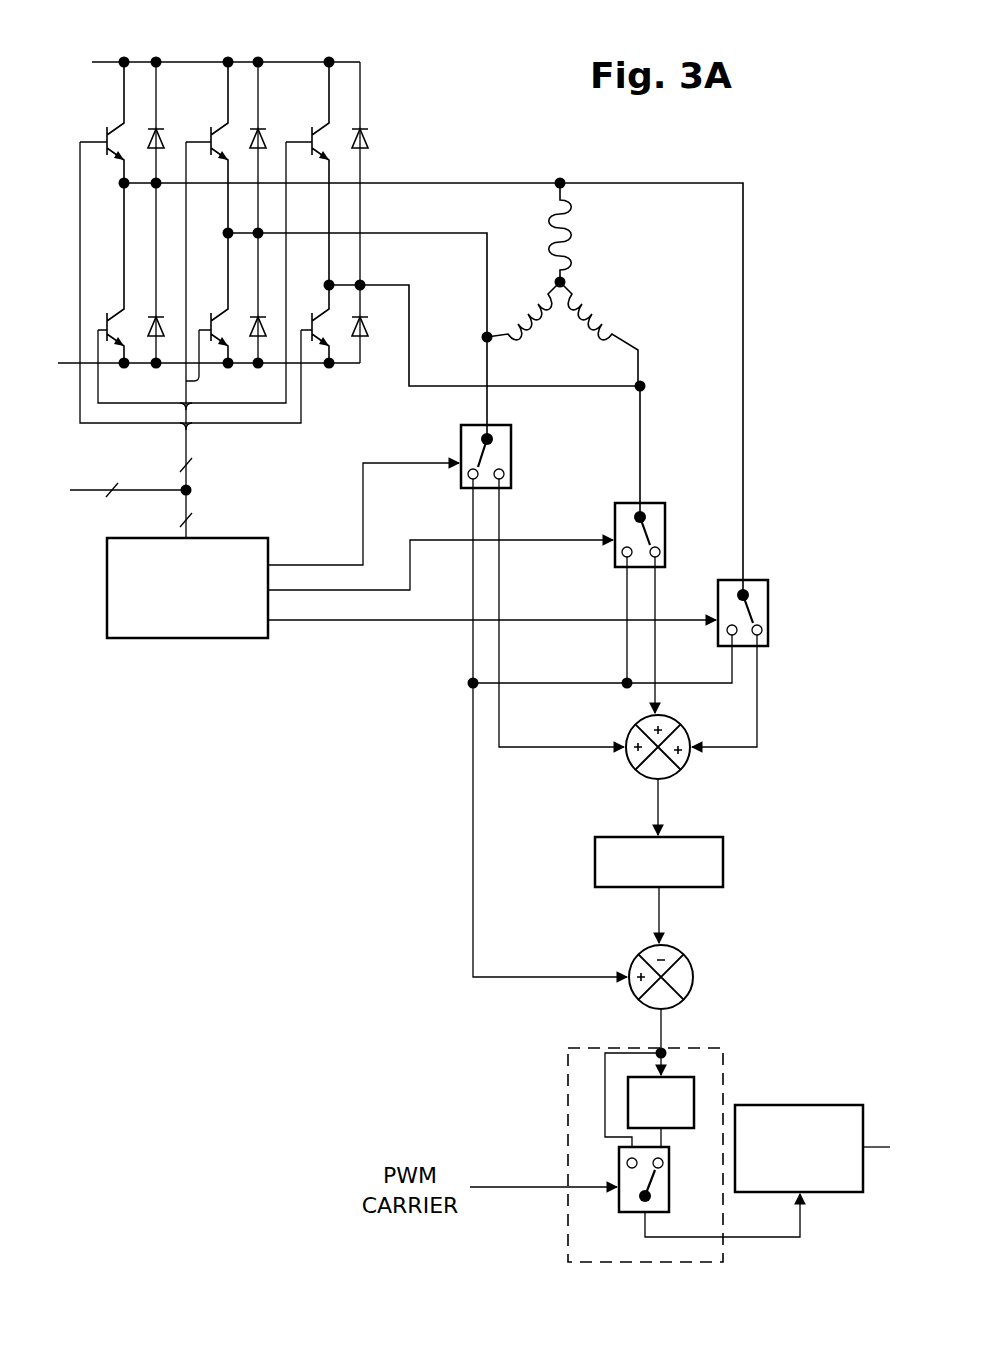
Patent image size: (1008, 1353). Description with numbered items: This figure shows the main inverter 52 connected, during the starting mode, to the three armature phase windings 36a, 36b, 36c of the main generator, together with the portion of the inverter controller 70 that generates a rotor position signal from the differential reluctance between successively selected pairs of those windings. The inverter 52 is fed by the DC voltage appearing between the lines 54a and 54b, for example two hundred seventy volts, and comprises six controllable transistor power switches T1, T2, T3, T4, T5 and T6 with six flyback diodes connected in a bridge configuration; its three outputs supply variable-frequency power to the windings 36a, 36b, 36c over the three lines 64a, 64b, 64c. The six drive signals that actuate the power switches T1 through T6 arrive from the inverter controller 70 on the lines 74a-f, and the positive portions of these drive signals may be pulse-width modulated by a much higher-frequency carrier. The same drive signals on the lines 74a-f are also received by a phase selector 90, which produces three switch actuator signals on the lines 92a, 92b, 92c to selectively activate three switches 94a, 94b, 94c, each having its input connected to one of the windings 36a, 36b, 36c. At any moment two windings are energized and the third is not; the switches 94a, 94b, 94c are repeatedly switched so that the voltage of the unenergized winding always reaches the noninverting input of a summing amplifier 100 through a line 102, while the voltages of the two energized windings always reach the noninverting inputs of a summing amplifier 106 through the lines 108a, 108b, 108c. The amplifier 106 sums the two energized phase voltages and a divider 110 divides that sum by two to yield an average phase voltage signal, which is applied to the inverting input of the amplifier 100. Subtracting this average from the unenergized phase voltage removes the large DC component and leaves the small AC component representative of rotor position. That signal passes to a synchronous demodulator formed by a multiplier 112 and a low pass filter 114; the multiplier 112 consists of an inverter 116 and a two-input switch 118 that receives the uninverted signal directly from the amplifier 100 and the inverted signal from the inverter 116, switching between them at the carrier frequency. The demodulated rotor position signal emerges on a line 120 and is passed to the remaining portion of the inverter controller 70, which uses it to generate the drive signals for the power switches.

The main inverter 52 is at (70, 226).
The DC link line 54a is at (187, 62).
The DC link line 54b is at (68, 365).
The controllable transistor power switch T1 is at (106, 133).
The controllable transistor power switch T2 is at (311, 318).
The controllable transistor power switch T3 is at (210, 133).
The controllable transistor power switch T4 is at (106, 318).
The controllable transistor power switch T5 is at (311, 133).
The controllable transistor power switch T6 is at (210, 318).
The line 64a is at (440, 182).
The line 64b is at (430, 233).
The line 64c is at (410, 356).
The armature phase winding 36a is at (574, 240).
The armature phase winding 36b is at (516, 345).
The armature phase winding 36c is at (611, 318).
The drive signal lines 74a-f is at (82, 493).
The phase selector 90 is at (190, 638).
The switch actuator line 92a is at (352, 622).
The switch actuator line 92b is at (306, 560).
The switch actuator line 92c is at (428, 540).
The switch 94a is at (770, 620).
The switch 94b is at (512, 462).
The switch 94c is at (615, 507).
The inverter controller 70 is at (778, 512).
The line 108a is at (760, 718).
The line 108b is at (508, 750).
The line 108c is at (656, 583).
The summing amplifier 106 is at (680, 773).
The divider 110 is at (725, 865).
The line 102 is at (473, 907).
The summing amplifier 100 is at (690, 993).
The multiplier 112 is at (735, 1052).
The inverter 116 is at (695, 1090).
The two-input switch 118 is at (625, 1214).
The low pass filter 114 is at (835, 1105).
The line 120 is at (880, 1150).